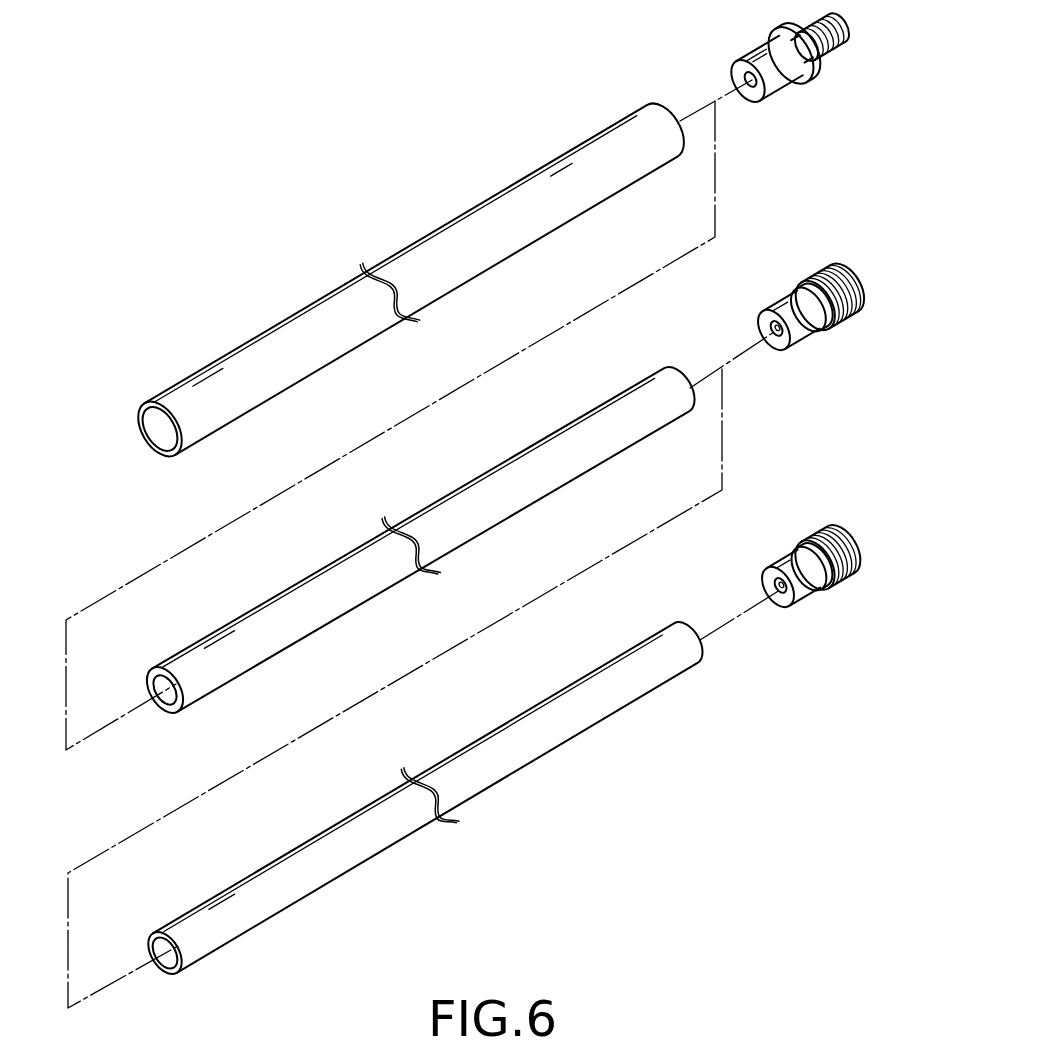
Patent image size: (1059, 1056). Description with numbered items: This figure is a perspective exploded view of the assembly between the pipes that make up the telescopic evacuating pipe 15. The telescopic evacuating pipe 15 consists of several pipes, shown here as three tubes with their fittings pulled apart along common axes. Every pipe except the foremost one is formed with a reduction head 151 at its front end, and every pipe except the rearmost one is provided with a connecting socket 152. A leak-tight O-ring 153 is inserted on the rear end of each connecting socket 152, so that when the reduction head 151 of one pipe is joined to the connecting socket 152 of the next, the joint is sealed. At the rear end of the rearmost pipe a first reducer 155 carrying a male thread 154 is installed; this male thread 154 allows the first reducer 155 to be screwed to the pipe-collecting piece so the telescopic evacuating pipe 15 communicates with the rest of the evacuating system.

The telescopic evacuating pipe 15 is at (465, 442).
The reduction head 151 is at (137, 418).
The connecting socket 152 is at (804, 323).
The leak-tight O-ring 153 is at (838, 270).
The male thread 154 is at (835, 58).
The first reducer 155 is at (779, 80).